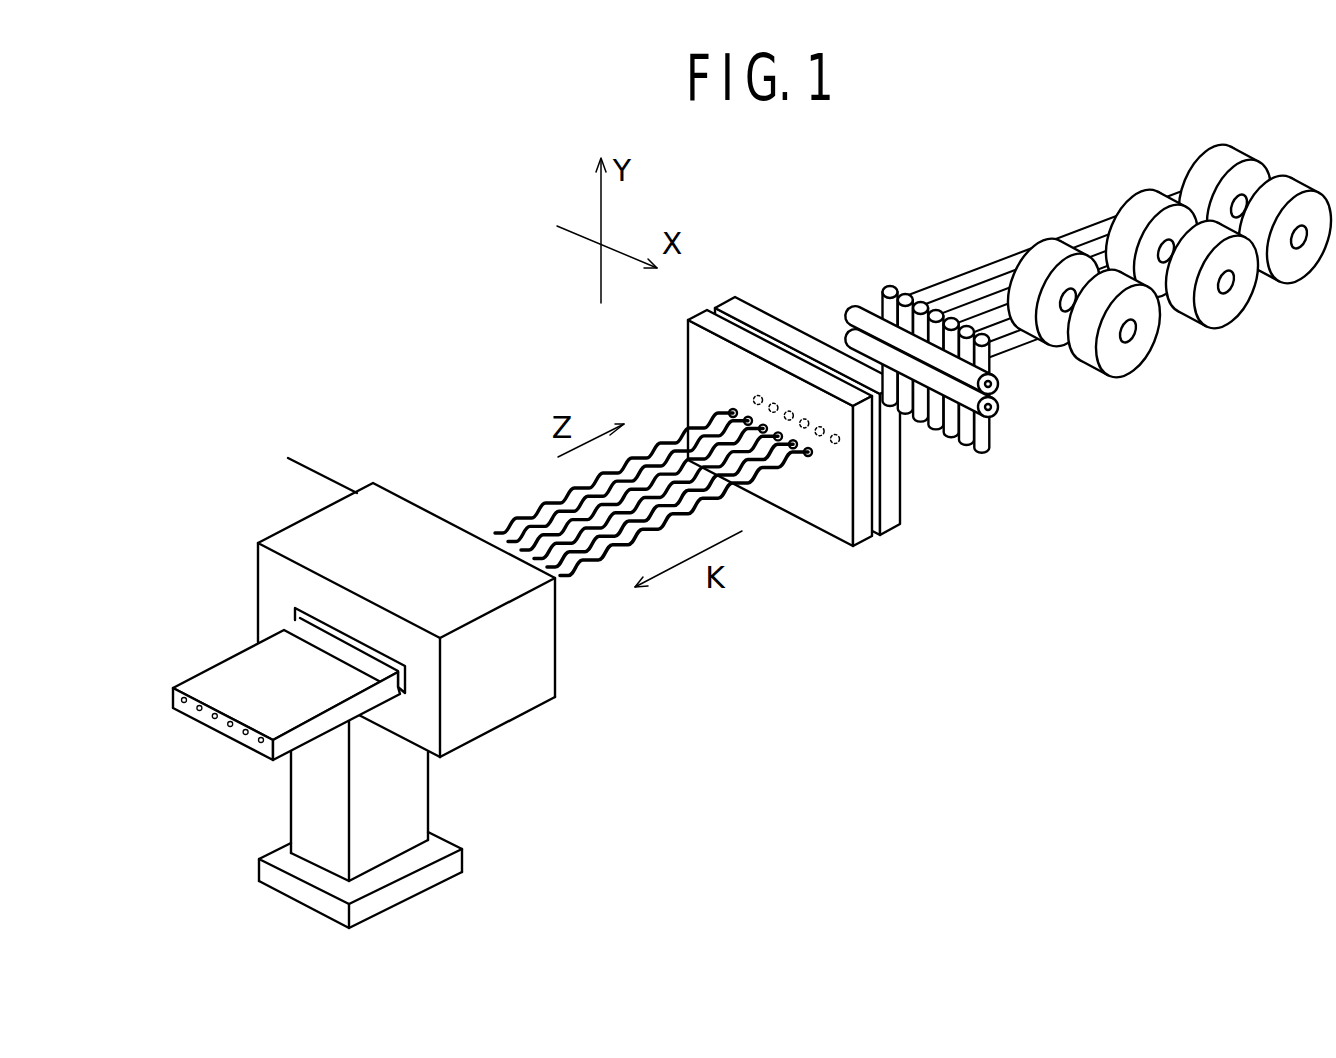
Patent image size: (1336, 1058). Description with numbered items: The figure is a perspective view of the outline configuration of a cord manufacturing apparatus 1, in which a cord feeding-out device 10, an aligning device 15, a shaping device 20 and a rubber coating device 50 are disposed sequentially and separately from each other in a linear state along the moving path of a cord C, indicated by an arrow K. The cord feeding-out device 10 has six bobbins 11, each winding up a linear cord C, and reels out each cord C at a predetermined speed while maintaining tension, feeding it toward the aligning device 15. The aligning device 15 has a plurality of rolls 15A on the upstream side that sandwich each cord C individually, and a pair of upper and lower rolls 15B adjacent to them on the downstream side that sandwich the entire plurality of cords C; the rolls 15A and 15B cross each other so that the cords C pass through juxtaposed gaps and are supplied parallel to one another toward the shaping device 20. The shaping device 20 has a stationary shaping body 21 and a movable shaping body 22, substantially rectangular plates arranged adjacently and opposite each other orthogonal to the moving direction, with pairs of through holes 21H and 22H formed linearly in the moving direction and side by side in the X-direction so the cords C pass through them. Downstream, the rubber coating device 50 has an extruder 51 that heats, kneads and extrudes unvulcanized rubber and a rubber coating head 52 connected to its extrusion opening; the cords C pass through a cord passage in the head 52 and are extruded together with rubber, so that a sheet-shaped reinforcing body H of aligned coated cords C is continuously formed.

The cord manufacturing apparatus 1 is at (488, 205).
The cord feeding-out device 10 is at (1165, 264).
The bobbins 11 is at (1228, 160).
The aligning device 15 is at (933, 384).
The rolls 15A is at (890, 286).
The upper and lower rolls 15B is at (853, 309).
The shaping device 20 is at (762, 463).
The stationary shaping body 21 is at (897, 520).
The through holes 21H is at (757, 397).
The movable shaping body 22 is at (862, 547).
The through holes 22H is at (731, 411).
The rubber coating device 50 is at (466, 636).
The extruder 51 is at (313, 490).
The rubber coating head 52 is at (556, 674).
The reinforcing body H is at (241, 669).
The cord C is at (545, 510).